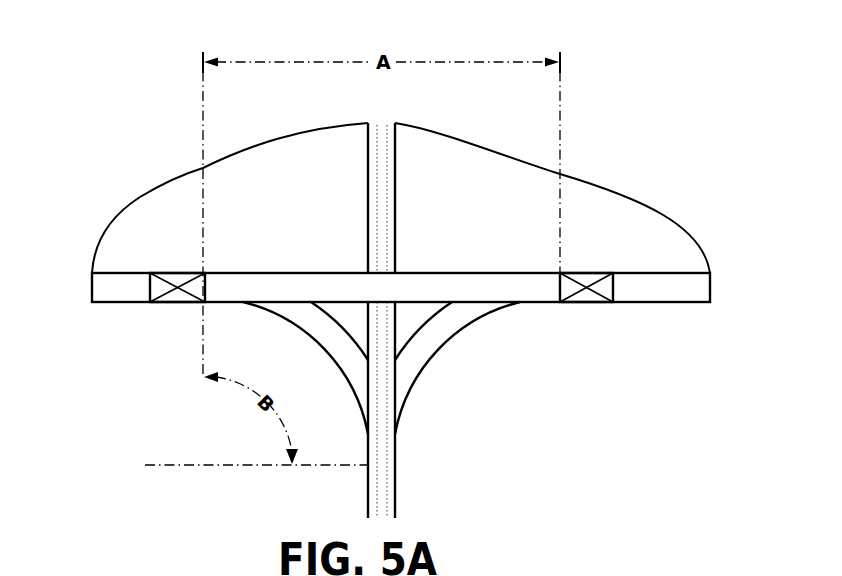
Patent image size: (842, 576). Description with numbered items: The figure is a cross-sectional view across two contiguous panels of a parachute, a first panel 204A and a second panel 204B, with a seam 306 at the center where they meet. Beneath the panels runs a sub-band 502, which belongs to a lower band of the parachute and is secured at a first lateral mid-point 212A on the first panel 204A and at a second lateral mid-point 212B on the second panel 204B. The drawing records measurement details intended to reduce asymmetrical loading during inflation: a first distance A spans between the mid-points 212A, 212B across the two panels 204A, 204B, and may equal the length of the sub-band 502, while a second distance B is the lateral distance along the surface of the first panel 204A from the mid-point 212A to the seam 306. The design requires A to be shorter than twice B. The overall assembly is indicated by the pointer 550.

The seam 306 is at (357, 157).
The first panel 204A is at (308, 204).
The second panel 204B is at (476, 204).
The sub-band 502 is at (397, 297).
The first lateral mid-point 212A is at (162, 302).
The second lateral mid-point 212B is at (603, 302).
The assembly 550 is at (634, 0).